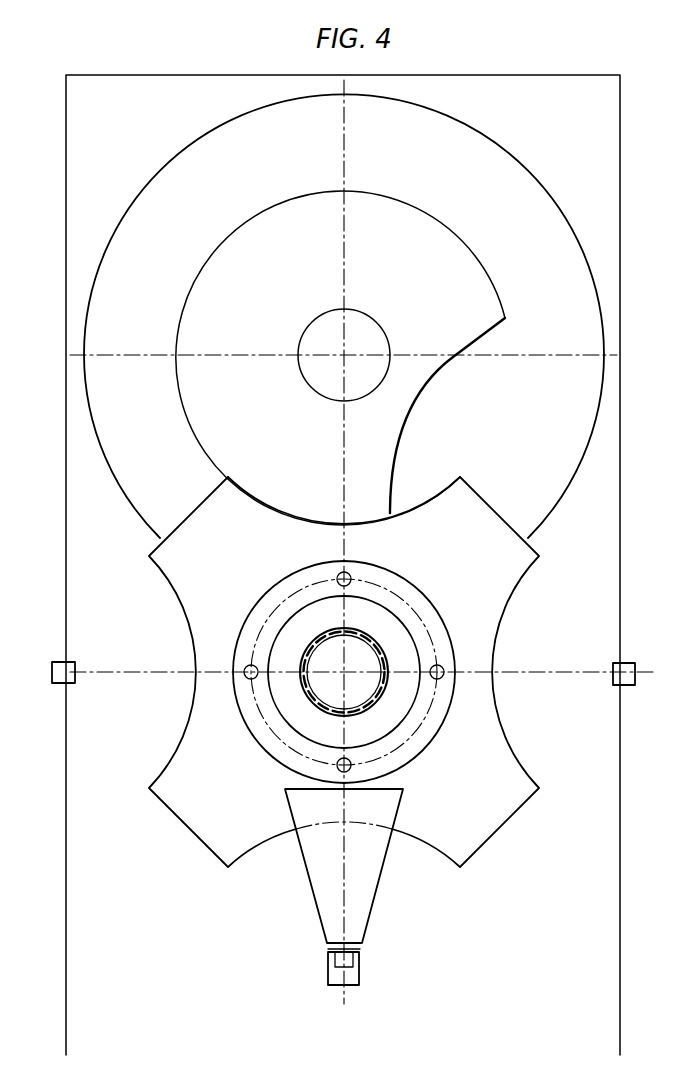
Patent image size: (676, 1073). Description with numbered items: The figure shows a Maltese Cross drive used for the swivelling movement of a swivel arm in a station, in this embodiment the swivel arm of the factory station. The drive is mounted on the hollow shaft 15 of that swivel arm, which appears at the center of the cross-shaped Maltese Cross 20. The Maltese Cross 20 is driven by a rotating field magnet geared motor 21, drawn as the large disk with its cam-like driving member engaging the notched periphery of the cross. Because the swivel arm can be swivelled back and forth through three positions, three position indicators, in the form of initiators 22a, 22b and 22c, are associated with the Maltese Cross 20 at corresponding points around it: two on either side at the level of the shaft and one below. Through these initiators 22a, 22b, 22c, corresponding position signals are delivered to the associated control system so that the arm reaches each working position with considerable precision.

The hollow shaft 15 is at (385, 657).
The Maltese Cross 20 is at (510, 817).
The rotating field magnet geared motor 21 is at (497, 157).
The initiator 22a is at (50, 663).
The initiator 22b is at (322, 973).
The initiator 22c is at (646, 670).